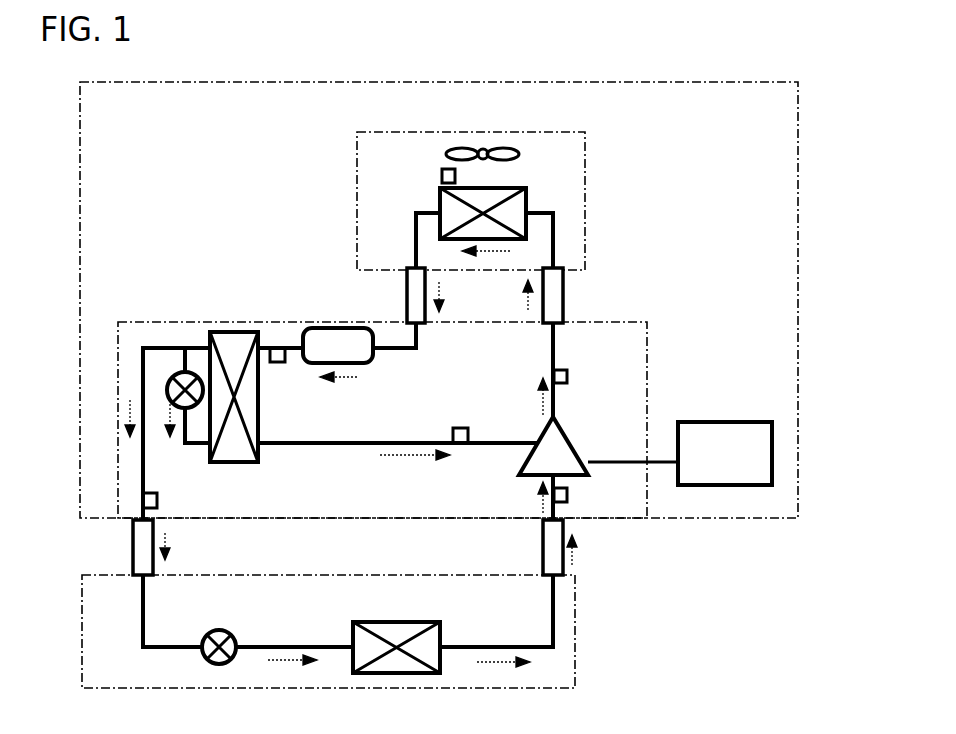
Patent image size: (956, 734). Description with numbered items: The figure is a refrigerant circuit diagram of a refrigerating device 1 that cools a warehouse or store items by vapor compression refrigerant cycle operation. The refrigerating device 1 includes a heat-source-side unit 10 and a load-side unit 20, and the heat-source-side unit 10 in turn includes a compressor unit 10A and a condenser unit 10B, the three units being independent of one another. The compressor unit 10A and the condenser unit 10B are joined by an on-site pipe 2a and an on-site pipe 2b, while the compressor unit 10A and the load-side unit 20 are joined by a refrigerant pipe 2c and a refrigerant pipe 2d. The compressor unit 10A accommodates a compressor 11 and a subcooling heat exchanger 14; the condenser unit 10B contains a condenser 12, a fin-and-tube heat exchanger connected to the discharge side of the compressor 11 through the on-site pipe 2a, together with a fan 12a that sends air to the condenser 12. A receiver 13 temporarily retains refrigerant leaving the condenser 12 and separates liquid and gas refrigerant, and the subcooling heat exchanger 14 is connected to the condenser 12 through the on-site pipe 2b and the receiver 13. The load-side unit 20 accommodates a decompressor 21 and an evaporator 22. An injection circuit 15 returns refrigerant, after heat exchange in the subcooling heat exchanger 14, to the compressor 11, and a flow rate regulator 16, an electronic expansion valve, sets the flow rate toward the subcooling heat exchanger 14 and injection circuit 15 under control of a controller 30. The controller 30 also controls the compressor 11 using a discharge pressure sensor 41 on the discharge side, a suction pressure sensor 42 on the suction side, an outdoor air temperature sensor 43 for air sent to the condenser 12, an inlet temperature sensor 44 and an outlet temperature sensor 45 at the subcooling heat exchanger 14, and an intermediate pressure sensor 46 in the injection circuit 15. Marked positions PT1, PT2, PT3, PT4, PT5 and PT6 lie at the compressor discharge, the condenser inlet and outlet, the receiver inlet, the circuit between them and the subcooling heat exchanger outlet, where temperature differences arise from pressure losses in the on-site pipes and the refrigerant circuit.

The refrigerating device 1 is at (690, 606).
The heat-source-side unit 10 is at (742, 520).
The compressor unit 10A is at (650, 322).
The condenser unit 10B is at (357, 170).
The compressor 11 is at (572, 450).
The condenser 12 is at (527, 190).
The fan 12a is at (484, 149).
The receiver 13 is at (305, 328).
The subcooling heat exchanger 14 is at (233, 332).
The injection circuit 15 is at (385, 443).
The flow rate regulator 16 is at (171, 377).
The load-side unit 20 is at (576, 628).
The decompressor 21 is at (234, 634).
The evaporator 22 is at (440, 626).
The on-site pipe 2a is at (564, 295).
The on-site pipe 2b is at (407, 295).
The refrigerant pipe 2c is at (133, 548).
The refrigerant pipe 2d is at (543, 548).
The controller 30 is at (727, 422).
The discharge pressure sensor 41 is at (567, 376).
The suction pressure sensor 42 is at (567, 495).
The outdoor air temperature sensor 43 is at (442, 172).
The inlet temperature sensor 44 is at (278, 362).
The outlet temperature sensor 45 is at (157, 496).
The intermediate pressure sensor 46 is at (460, 428).
The position on the discharge side of the compressor PT1 is at (553, 372).
The position on the inlet side of the condenser PT2 is at (553, 237).
The position on the outlet side of the condenser PT3 is at (415, 210).
The position on the inlet side of the receiver PT4 is at (416, 348).
The position in the refrigerant circuit PT5 is at (278, 347).
The position on the outlet side of the subcooling heat exchanger PT6 is at (157, 503).